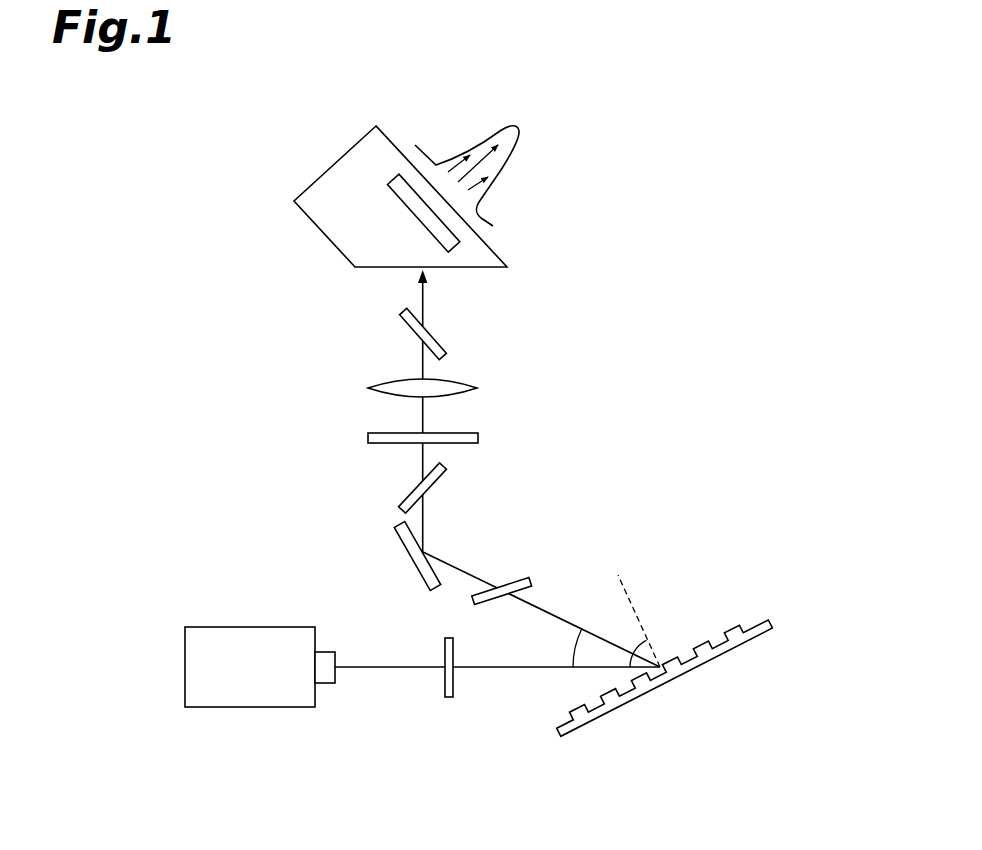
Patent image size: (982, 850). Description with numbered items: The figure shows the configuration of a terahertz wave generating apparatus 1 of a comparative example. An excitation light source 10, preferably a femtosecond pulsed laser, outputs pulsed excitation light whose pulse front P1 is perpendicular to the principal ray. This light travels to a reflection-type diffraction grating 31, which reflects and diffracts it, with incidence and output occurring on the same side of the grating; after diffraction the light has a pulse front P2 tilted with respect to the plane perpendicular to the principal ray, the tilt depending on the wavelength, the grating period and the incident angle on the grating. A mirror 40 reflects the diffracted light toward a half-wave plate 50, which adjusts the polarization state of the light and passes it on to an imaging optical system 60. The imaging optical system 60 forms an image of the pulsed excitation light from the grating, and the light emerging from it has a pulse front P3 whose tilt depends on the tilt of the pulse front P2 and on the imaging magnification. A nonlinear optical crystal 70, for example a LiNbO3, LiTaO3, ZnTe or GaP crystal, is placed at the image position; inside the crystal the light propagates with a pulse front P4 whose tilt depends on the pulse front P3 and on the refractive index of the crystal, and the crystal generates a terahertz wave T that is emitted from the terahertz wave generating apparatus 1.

The terahertz wave generating apparatus 1 is at (660, 166).
The excitation light source 10 is at (253, 707).
The reflection-type diffraction grating 31 is at (608, 712).
The mirror 40 is at (402, 548).
The half-wave plate 50 is at (368, 437).
The imaging optical system 60 is at (387, 379).
The nonlinear optical crystal 70 is at (336, 247).
The pulse front P1 is at (450, 698).
The pulse front P2 is at (433, 483).
The pulse front P3 is at (432, 333).
The pulse front P4 is at (450, 233).
The terahertz wave T is at (513, 152).